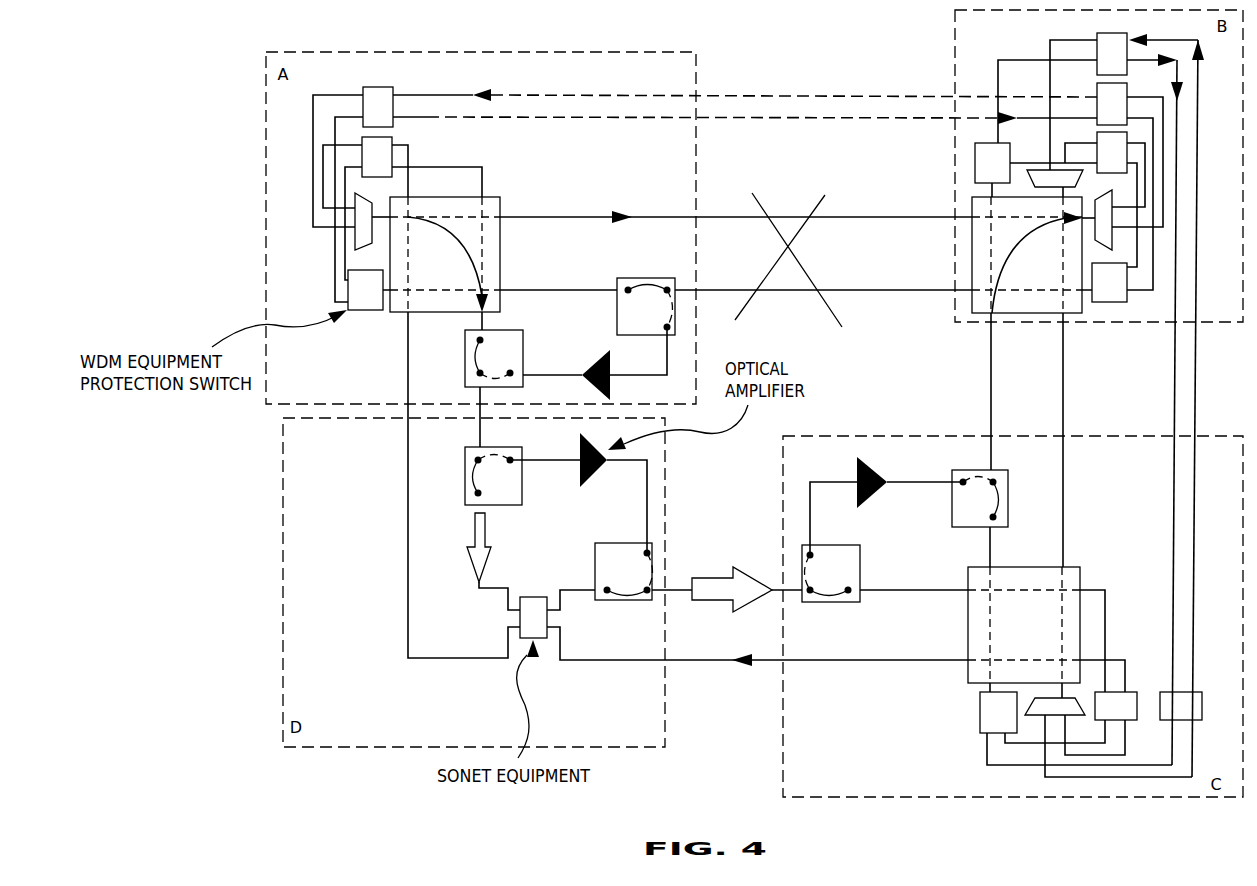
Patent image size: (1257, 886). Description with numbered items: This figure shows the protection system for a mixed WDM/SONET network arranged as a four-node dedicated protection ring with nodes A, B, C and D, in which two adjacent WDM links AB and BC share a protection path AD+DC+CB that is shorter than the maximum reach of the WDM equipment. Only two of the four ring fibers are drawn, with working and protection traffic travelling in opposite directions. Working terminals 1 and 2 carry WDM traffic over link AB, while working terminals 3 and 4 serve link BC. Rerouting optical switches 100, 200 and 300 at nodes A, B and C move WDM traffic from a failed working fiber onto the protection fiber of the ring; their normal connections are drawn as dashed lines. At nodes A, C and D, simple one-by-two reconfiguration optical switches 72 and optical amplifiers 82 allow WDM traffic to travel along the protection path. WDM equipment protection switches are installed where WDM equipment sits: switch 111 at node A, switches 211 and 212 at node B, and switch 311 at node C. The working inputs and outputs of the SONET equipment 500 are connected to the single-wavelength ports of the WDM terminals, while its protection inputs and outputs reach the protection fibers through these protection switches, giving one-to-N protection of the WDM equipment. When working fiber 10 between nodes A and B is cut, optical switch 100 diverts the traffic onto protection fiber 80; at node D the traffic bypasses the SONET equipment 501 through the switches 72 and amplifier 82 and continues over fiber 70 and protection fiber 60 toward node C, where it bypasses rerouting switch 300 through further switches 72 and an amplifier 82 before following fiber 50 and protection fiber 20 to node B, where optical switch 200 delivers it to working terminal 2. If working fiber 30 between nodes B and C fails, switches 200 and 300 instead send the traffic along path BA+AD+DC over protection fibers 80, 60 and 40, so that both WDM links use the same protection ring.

The working terminal 1 is at (372, 222).
The working terminal 2 is at (1097, 227).
The working terminal 3 is at (1055, 172).
The working terminal 4 is at (1052, 699).
The working fiber 10 is at (736, 209).
The protection fiber 20 is at (737, 303).
The working fiber 30 is at (1076, 440).
The protection fiber 40 is at (974, 391).
The protection fiber 50 is at (757, 656).
The protection fiber 60 is at (727, 585).
The protection fiber 70 is at (449, 485).
The protection fiber 80 is at (495, 379).
The reconfiguration optical switch 72 is at (736, 440).
The optical amplifier 82 is at (736, 441).
The rerouting optical switch 100 is at (445, 254).
The WDM equipment protection switch 111 is at (365, 290).
The rerouting optical switch 200 is at (1027, 248).
The WDM equipment protection switch 211 is at (1109, 282).
The WDM equipment protection switch 212 is at (992, 163).
The rerouting optical switch 300 is at (1024, 625).
The WDM equipment protection switch 311 is at (998, 712).
The SONET equipment 500 is at (782, 376).
The SONET equipment 501 is at (533, 617).